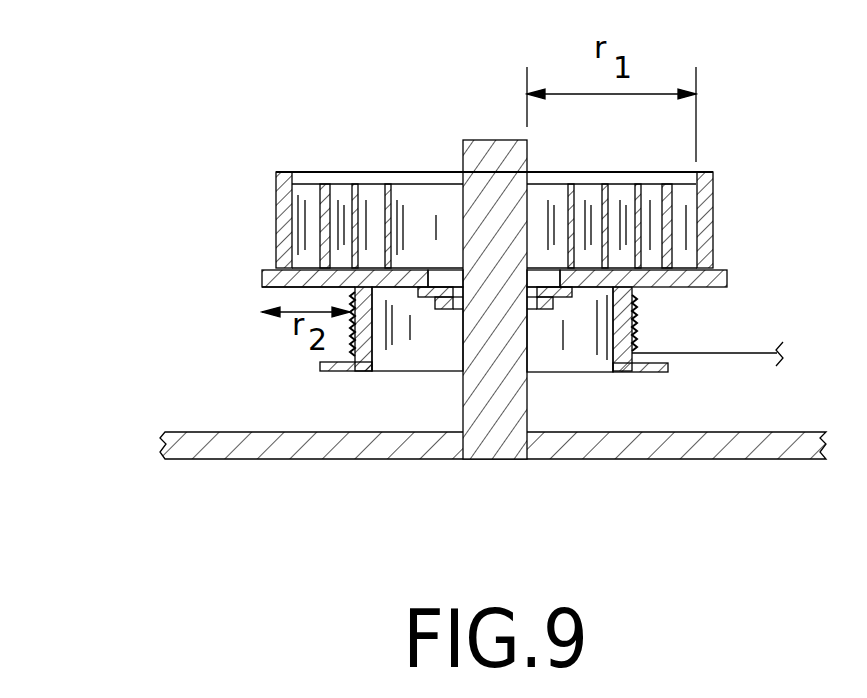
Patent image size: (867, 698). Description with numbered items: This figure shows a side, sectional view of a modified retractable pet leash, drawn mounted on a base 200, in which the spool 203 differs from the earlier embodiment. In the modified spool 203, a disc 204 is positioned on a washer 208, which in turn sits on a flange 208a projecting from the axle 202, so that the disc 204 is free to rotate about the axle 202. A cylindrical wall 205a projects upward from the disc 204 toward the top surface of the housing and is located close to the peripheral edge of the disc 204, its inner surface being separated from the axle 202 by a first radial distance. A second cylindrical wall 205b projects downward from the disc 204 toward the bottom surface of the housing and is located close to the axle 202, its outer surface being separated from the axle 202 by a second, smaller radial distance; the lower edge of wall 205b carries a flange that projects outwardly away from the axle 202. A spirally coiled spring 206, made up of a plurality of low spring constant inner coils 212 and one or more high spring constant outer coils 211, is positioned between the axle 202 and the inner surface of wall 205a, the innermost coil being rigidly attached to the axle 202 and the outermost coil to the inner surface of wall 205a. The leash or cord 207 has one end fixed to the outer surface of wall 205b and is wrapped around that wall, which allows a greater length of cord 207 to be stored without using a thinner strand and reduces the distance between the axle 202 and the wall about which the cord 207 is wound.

The base plate 200 is at (695, 460).
The axle 202 is at (498, 140).
The spool 203 is at (155, 338).
The disc 204 is at (262, 278).
The cylindrical wall 205a is at (277, 173).
The cylindrical wall 205b is at (350, 368).
The spirally coiled spring 206 is at (347, 26).
The cord 207 is at (634, 321).
The washer 208 is at (425, 297).
The flange 208a is at (437, 310).
The high spring constant outer coils 211 is at (328, 182).
The low spring constant inner coils 212 is at (377, 182).